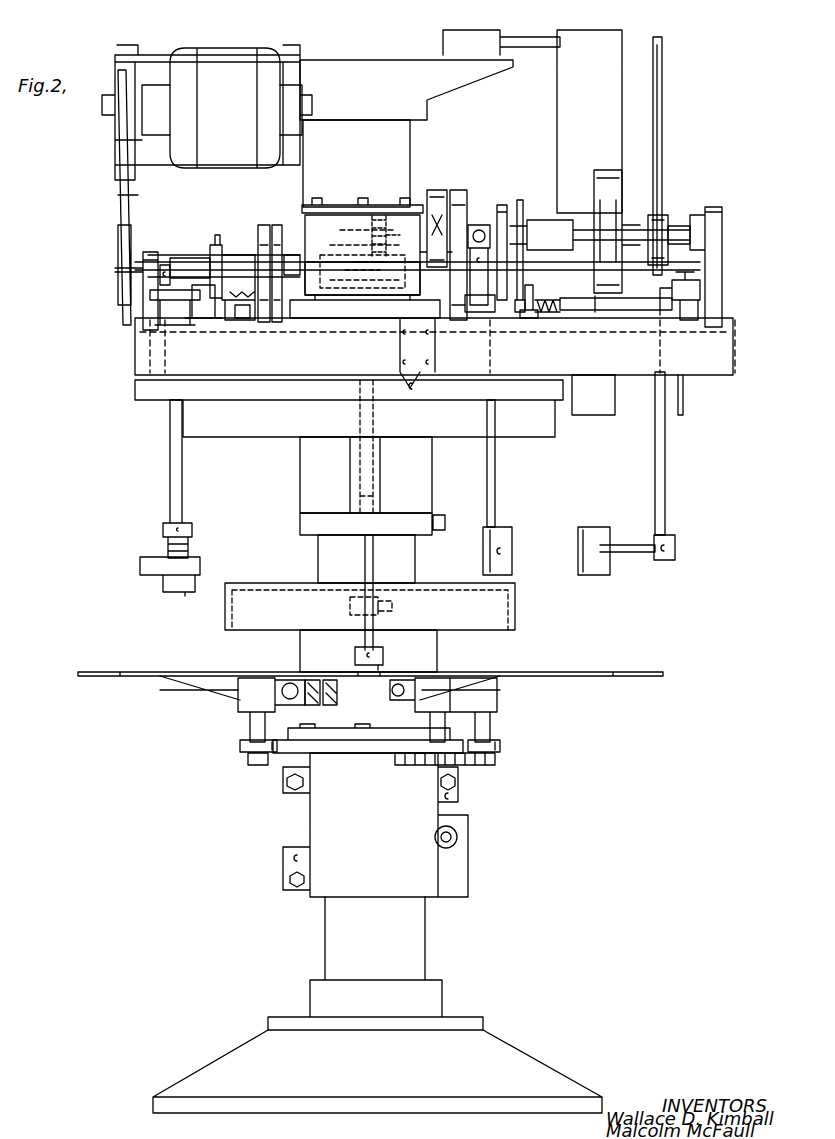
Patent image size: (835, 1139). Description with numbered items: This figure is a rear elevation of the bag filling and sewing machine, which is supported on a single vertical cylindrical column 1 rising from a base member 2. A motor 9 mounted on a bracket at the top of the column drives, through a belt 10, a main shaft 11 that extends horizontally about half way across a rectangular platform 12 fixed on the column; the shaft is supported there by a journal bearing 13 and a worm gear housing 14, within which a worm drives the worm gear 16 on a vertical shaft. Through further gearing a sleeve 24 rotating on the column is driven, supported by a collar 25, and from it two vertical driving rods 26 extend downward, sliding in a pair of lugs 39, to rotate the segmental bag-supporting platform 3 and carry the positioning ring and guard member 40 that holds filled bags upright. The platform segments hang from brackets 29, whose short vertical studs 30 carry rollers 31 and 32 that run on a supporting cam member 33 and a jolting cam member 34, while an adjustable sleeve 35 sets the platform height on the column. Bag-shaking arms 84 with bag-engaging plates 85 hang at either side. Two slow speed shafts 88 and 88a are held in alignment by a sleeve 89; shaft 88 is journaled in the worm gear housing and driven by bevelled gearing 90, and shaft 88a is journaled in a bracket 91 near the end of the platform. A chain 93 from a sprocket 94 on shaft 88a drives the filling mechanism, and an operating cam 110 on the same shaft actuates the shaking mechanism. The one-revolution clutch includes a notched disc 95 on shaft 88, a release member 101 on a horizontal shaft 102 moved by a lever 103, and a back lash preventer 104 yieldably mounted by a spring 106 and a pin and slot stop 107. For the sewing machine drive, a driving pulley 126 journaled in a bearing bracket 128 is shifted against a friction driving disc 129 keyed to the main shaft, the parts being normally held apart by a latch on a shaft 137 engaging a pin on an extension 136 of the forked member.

The vertical cylindrical column 1 is at (412, 945).
The base member 2 is at (518, 1060).
The bag-supporting platform 3 is at (110, 672).
The motor 9 is at (225, 62).
The belt 10 is at (121, 197).
The main shaft 11 is at (203, 250).
The rectangular platform 12 is at (722, 348).
The journal bearing 13 is at (156, 262).
The worm gear housing 14 is at (332, 222).
The worm gear 16 is at (322, 295).
The sleeve 24 is at (420, 466).
The collar 25 is at (428, 530).
The vertical driving rods 26 is at (366, 553).
The brackets 29 is at (232, 686).
The vertical studs 30 is at (250, 727).
The rollers 31 is at (243, 748).
The rollers 32 is at (250, 758).
The supporting cam member 33 is at (330, 752).
The jolting cam member 34 is at (462, 765).
The adjustable sleeve 35 is at (313, 822).
The lugs 39 is at (383, 660).
The positioning ring and guard member 40 is at (440, 590).
The arms 84 is at (495, 474).
The bag-engaging plates 85 is at (512, 535).
The slow speed shaft 88 is at (432, 190).
The slow speed shaft 88a is at (682, 228).
The sleeve 89 is at (543, 222).
The bevelled gearing 90 is at (378, 210).
The bracket 91 is at (718, 273).
The chain 93 is at (661, 110).
The sprocket 94 is at (660, 200).
The disc 95 is at (504, 205).
The release member 101 is at (487, 216).
The horizontal shaft 102 is at (592, 300).
The lever 103 is at (700, 290).
The back lash preventer 104 is at (521, 200).
The spring 106 is at (560, 298).
The pin and slot stop 107 is at (528, 287).
The operating cam 110 is at (607, 175).
The driving pulley 126 is at (265, 228).
The bearing bracket 128 is at (240, 262).
The friction driving disc 129 is at (278, 226).
The extension 136 is at (186, 280).
The shaft 137 is at (172, 500).